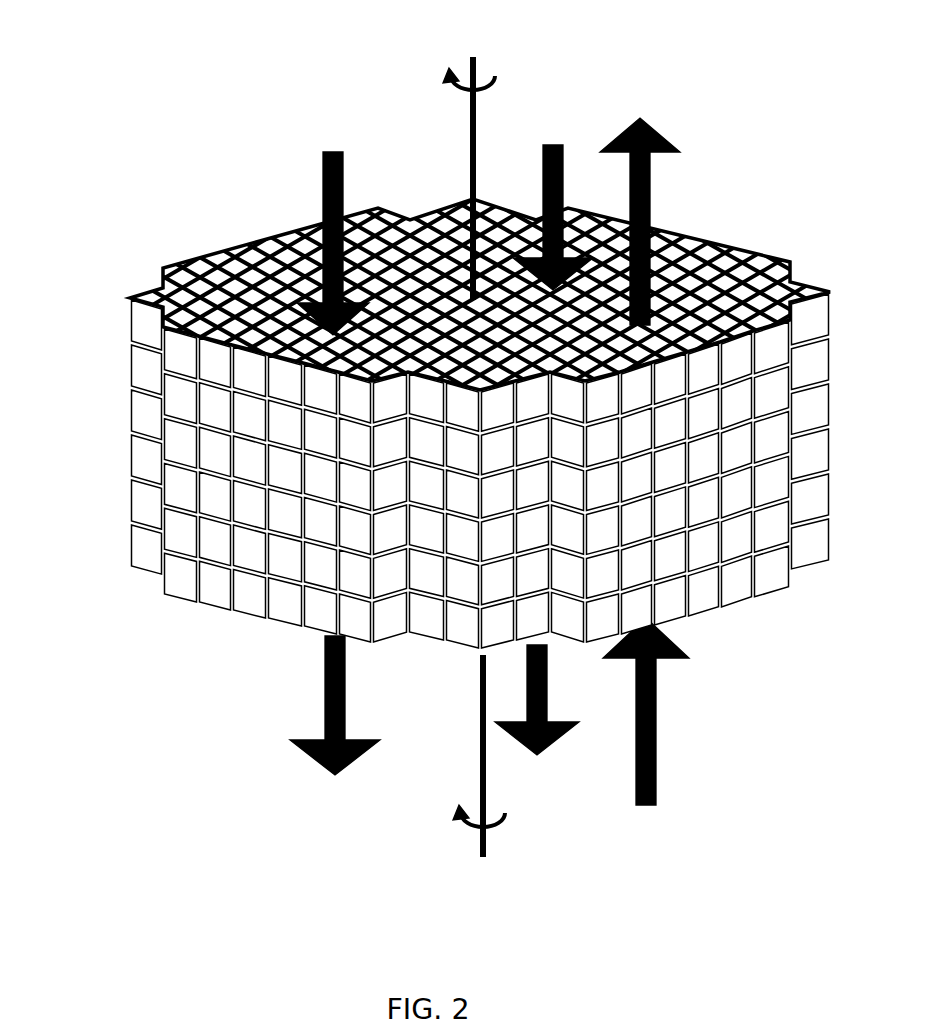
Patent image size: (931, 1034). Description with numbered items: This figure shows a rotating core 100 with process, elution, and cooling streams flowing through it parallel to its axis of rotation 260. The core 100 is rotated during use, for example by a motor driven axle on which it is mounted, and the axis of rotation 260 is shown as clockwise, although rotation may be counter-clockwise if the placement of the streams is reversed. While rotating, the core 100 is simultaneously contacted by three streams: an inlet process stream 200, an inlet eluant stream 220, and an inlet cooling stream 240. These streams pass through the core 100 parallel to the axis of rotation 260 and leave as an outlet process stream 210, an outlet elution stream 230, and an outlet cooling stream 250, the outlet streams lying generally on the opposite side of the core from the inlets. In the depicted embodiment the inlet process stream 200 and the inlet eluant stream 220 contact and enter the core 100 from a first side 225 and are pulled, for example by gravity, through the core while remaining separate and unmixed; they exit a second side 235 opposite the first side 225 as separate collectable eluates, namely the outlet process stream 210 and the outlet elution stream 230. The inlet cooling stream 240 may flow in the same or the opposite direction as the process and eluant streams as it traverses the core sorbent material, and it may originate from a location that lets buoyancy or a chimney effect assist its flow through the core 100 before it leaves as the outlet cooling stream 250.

The core 100 is at (429, 399).
The inlet process stream 200 is at (324, 160).
The outlet process stream 210 is at (296, 754).
The inlet eluant stream 220 is at (562, 158).
The first side 225 is at (732, 244).
The outlet elution stream 230 is at (580, 738).
The second side 235 is at (288, 626).
The inlet cooling stream 240 is at (664, 794).
The outlet cooling stream 250 is at (672, 152).
The axis of rotation 260 is at (477, 62).